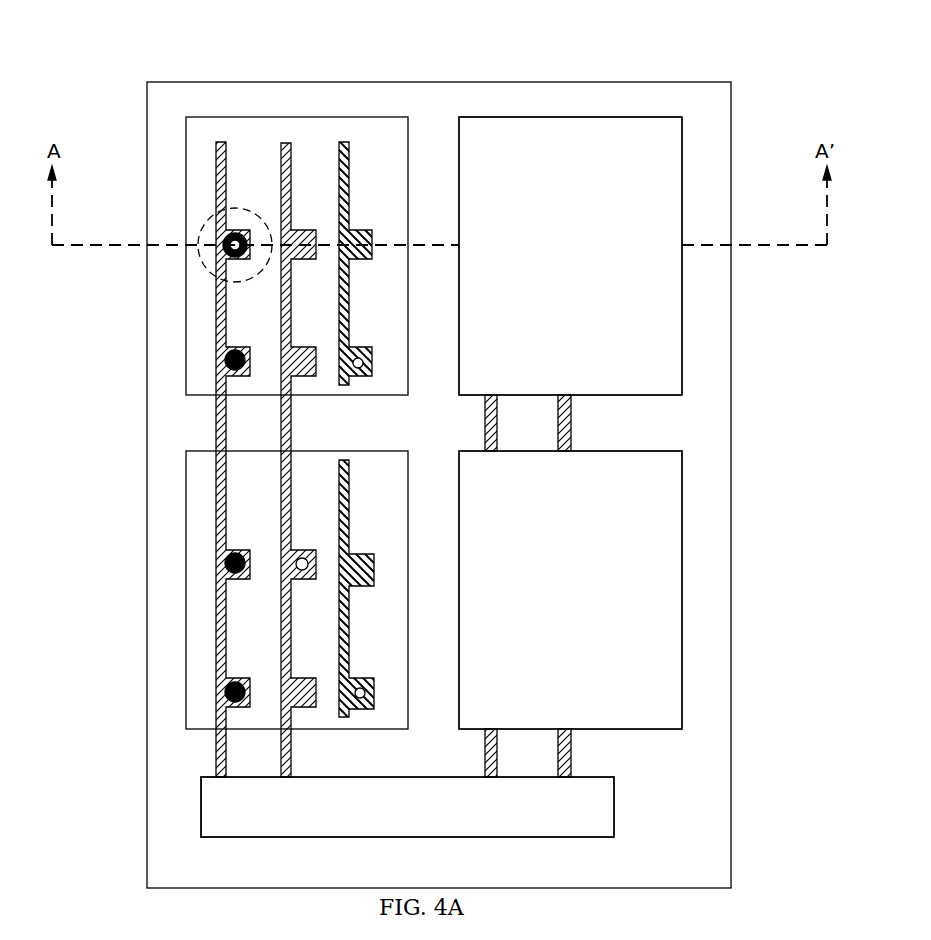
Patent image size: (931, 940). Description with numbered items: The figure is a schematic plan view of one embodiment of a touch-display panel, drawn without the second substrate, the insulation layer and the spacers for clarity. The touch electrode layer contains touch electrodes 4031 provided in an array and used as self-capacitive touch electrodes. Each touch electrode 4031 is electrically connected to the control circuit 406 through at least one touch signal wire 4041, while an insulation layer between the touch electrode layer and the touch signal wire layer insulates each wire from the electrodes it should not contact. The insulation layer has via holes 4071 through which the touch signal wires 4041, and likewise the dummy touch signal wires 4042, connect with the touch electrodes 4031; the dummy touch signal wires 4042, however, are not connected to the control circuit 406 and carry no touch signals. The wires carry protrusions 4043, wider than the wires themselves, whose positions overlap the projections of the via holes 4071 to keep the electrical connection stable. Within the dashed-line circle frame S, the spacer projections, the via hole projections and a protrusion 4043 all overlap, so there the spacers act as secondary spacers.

The control circuit 406 is at (211, 812).
The via hole 4071 is at (555, 117).
The touch electrode 4031 is at (682, 317).
The dummy touch signal wire 4042 is at (676, 497).
The touch signal wire 4041 is at (215, 322).
The protrusion 4043 is at (365, 240).
The dashed-line circle frame S is at (240, 208).